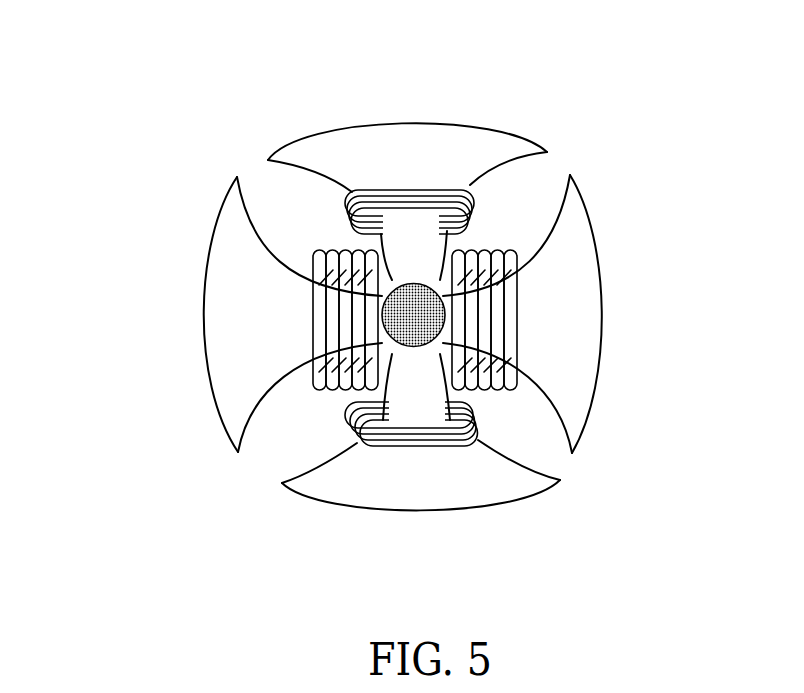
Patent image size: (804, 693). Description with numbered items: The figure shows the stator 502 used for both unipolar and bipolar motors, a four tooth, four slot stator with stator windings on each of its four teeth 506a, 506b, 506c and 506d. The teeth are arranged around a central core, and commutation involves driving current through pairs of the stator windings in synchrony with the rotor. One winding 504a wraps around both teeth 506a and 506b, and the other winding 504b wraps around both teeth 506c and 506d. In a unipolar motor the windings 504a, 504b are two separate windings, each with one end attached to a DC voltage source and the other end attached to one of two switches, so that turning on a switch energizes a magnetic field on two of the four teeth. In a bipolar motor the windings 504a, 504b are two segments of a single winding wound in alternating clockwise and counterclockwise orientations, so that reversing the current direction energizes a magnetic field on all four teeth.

The stator winding 502 is at (512, 89).
The winding 504a is at (467, 232).
The winding 504b is at (447, 367).
The stator tooth 506a is at (361, 124).
The stator tooth 506b is at (295, 505).
The stator tooth 506c is at (228, 182).
The stator tooth 506d is at (582, 178).